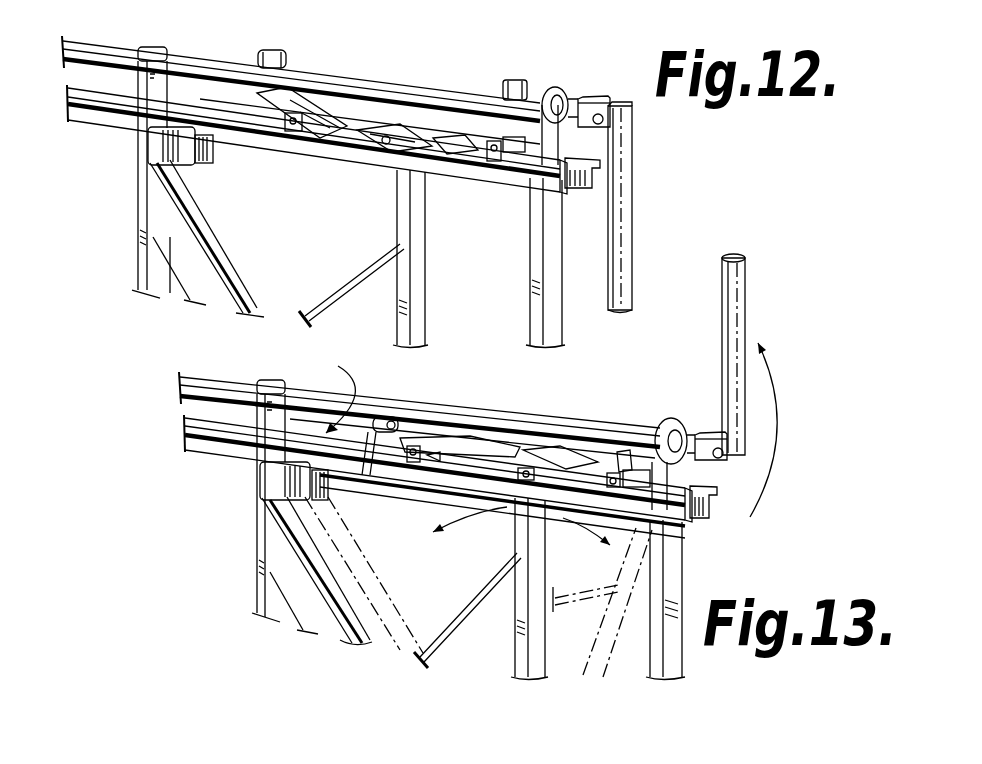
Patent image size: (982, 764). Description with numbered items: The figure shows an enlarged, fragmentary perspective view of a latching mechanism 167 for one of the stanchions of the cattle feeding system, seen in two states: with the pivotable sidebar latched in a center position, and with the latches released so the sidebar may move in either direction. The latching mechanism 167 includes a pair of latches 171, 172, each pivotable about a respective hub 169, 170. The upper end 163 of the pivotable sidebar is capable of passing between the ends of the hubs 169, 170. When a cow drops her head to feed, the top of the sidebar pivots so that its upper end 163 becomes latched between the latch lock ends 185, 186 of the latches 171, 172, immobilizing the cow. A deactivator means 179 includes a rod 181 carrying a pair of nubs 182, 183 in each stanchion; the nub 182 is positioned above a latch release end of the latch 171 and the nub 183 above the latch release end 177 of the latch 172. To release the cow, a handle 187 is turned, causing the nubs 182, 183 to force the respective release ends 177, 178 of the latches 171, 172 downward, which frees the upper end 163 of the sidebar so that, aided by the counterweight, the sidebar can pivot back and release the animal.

In FIG. 12, the upper end 163 is at (417, 132).
In FIG. 12, the latching mechanism 167 is at (412, 62).
In FIG. 12, the hub 169 is at (300, 132).
In FIG. 12, the hub 170 is at (493, 160).
In FIG. 12, the latch 171 is at (332, 105).
In FIG. 12, the latch 172 is at (467, 156).
In FIG. 13, the latch release end 177 is at (373, 433).
In FIG. 13, the release end 178 is at (617, 443).
In FIG. 12, the deactivator means 179 is at (582, 72).
In FIG. 12, the rod 181 is at (452, 92).
In FIG. 12, the nub 182 is at (286, 31).
In FIG. 12, the nub 183 is at (541, 45).
In FIG. 12, the latch lock end 185 is at (387, 144).
In FIG. 13, the latch lock end 185 is at (500, 440).
In FIG. 13, the latch lock end 186 is at (537, 447).
In FIG. 12, the handle 187 is at (632, 248).
In FIG. 13, the handle 187 is at (748, 323).